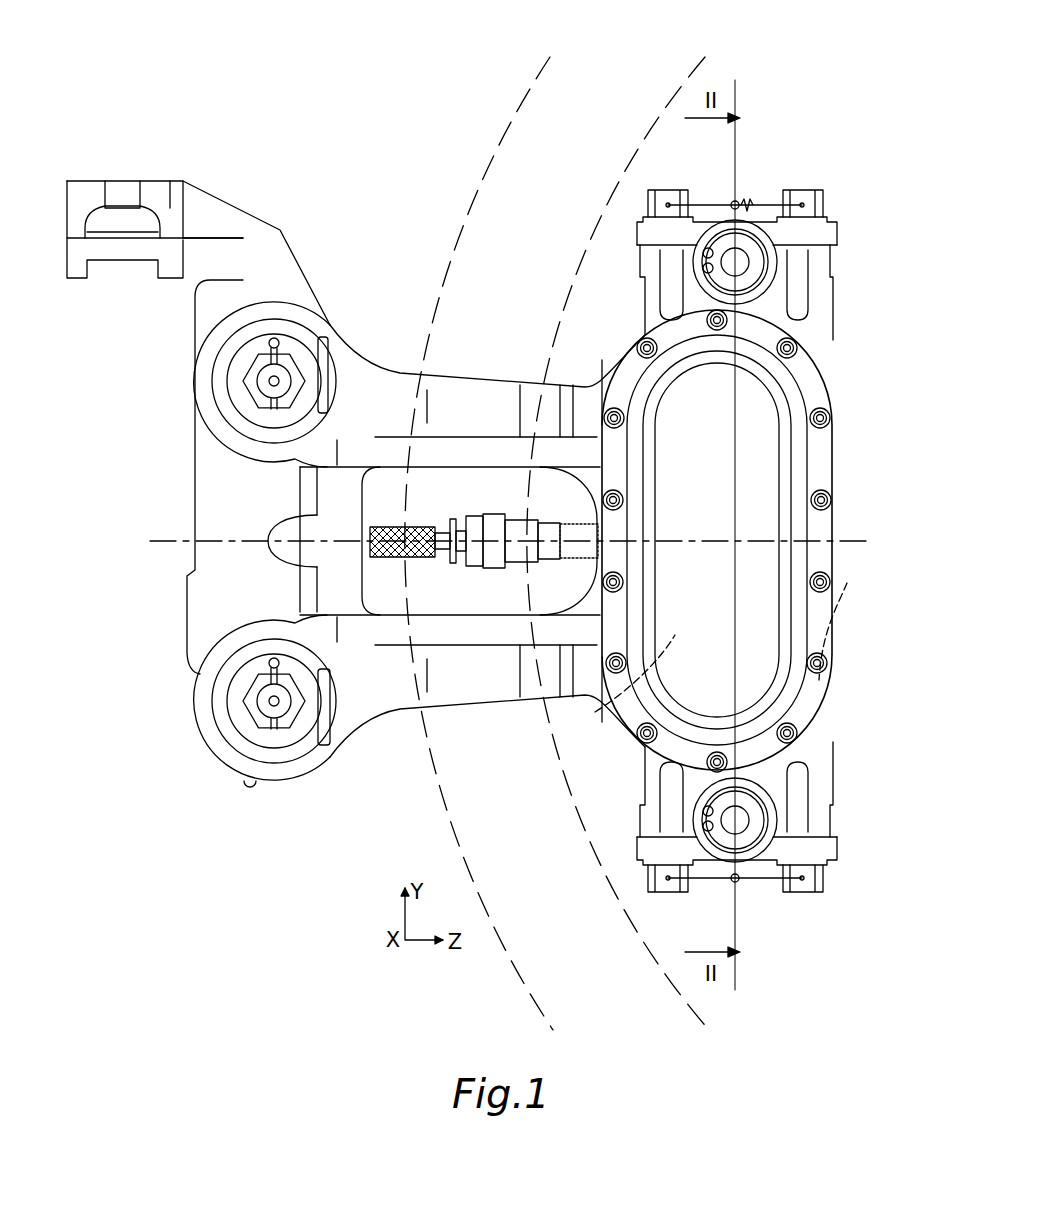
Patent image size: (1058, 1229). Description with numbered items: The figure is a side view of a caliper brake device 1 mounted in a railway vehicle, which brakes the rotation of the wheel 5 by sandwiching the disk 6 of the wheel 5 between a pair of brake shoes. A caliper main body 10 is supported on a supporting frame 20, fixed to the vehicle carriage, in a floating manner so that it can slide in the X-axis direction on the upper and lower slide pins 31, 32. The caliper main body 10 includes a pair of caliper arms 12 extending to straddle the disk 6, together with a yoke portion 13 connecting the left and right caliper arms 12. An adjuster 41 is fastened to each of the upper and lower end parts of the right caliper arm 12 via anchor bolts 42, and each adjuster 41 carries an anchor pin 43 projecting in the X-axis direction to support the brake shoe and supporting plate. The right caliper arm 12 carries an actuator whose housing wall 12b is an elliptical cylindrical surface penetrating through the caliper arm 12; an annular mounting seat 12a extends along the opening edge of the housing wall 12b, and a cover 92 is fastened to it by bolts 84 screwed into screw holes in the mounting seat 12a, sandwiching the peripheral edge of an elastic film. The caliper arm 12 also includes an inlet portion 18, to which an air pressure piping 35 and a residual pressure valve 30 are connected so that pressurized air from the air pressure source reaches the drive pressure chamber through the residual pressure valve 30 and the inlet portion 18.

The caliper brake device 1 is at (469, 486).
The wheel 5 is at (503, 945).
The disk 6 is at (653, 945).
The caliper main body 10 is at (440, 381).
The caliper arm 12 is at (487, 387).
The annular mounting seat 12a is at (845, 618).
The housing wall 12b is at (596, 712).
The yoke portion 13 is at (353, 500).
The inlet portion 18 is at (560, 563).
The supporting frame 20 is at (253, 210).
The residual pressure valve 30 is at (493, 563).
The upper slide pin 31 is at (293, 350).
The lower slide pin 32 is at (288, 733).
The air pressure piping 35 is at (428, 557).
The adjuster 41 is at (758, 242).
The anchor bolt 42 is at (740, 542).
The anchor pin 43 is at (727, 247).
The bolt 84 is at (820, 682).
The cover 92 is at (760, 425).